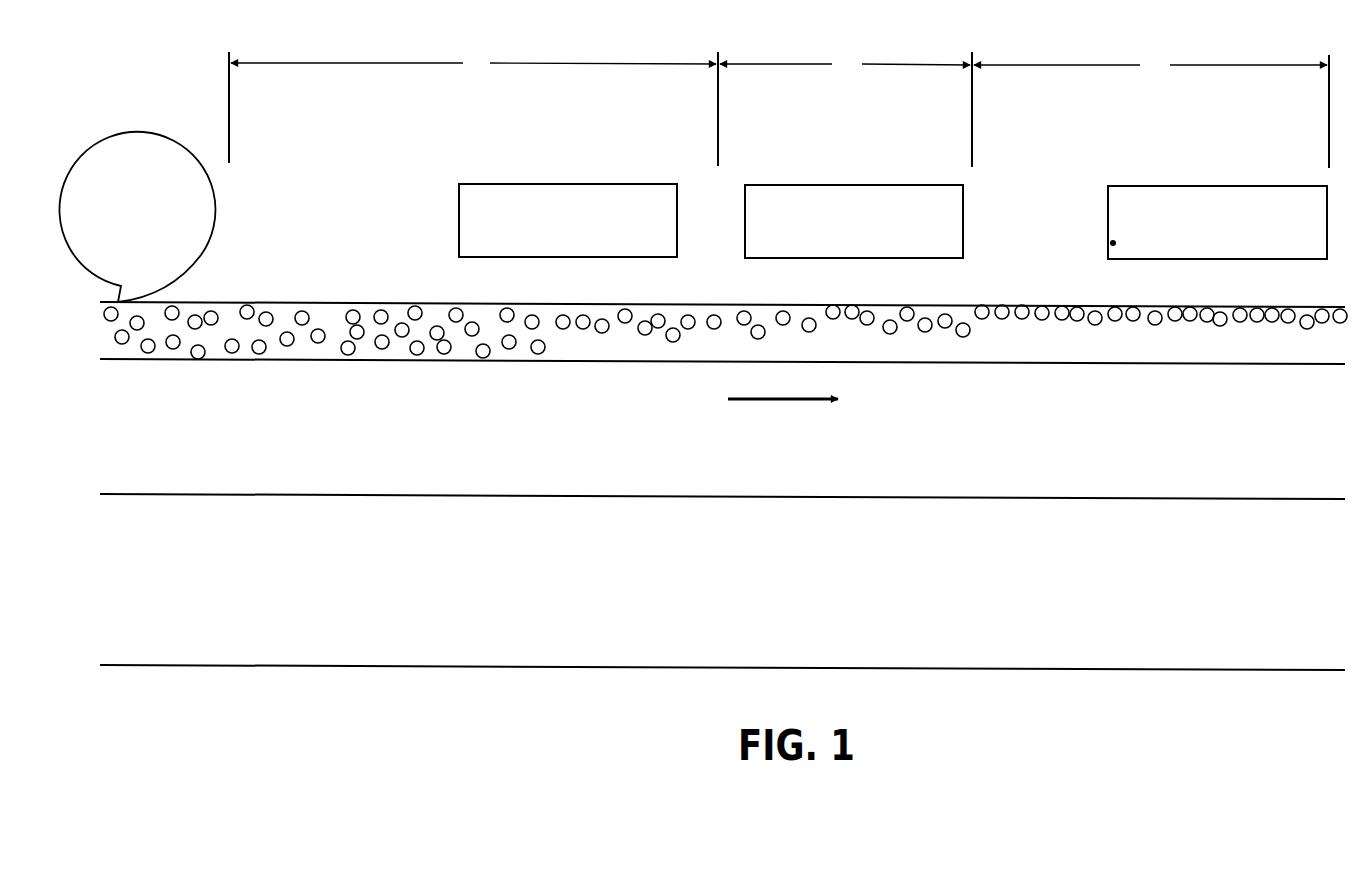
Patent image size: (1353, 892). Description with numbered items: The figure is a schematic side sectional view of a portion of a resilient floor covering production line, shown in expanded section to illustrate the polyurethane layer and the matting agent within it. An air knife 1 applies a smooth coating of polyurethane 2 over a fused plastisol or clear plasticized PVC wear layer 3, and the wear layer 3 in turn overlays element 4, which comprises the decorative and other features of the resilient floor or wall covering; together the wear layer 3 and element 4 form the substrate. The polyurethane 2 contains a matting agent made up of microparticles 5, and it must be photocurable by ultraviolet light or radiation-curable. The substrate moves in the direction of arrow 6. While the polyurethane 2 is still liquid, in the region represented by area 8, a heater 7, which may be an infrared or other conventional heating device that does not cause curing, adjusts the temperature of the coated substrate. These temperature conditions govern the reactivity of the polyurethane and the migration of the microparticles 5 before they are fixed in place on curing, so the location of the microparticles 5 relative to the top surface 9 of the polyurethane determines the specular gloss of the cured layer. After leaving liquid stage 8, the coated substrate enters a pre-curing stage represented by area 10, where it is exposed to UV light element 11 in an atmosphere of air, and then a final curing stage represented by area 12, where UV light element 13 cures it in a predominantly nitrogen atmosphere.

The air knife 1 is at (127, 135).
The polyurethane 2 is at (323, 312).
The wear layer 3 is at (722, 456).
The element 4 is at (722, 617).
The microparticles 5 is at (349, 355).
The arrow 6 is at (803, 400).
The heater 7 is at (568, 220).
The liquid stage area 8 is at (472, 107).
The top surface 9 is at (554, 302).
The pre-curing stage area 10 is at (844, 109).
The UV light element 11 is at (854, 240).
The final curing stage area 12 is at (1150, 110).
The UV light element 13 is at (1217, 243).